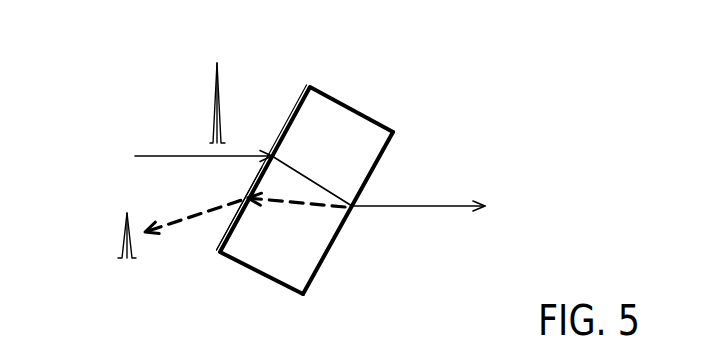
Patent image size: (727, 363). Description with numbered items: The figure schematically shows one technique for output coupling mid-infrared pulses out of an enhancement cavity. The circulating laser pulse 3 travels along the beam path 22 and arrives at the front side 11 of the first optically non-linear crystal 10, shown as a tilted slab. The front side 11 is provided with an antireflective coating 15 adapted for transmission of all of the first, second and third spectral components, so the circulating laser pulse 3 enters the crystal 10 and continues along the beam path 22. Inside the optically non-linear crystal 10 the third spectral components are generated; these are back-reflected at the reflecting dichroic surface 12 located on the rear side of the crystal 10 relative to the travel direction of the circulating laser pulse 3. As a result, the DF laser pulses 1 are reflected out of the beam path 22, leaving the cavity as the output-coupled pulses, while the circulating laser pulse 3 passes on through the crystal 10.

The first optically non-linear crystal 10 is at (302, 275).
The front side 11 is at (300, 95).
The reflecting dichroic surface 12 is at (337, 238).
The antireflective coating 15 is at (227, 227).
The beam path 22 is at (185, 155).
The circulating laser pulse 3 is at (213, 97).
The DF laser pulses 1 is at (120, 242).